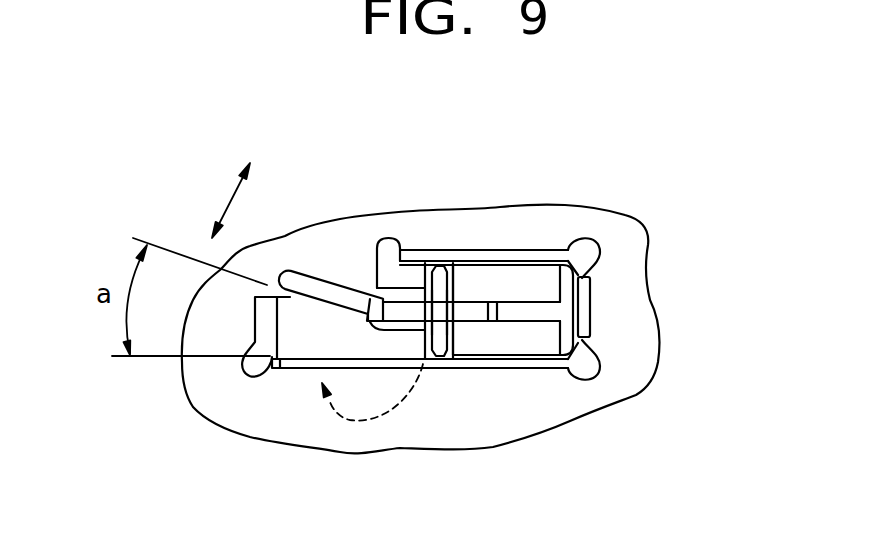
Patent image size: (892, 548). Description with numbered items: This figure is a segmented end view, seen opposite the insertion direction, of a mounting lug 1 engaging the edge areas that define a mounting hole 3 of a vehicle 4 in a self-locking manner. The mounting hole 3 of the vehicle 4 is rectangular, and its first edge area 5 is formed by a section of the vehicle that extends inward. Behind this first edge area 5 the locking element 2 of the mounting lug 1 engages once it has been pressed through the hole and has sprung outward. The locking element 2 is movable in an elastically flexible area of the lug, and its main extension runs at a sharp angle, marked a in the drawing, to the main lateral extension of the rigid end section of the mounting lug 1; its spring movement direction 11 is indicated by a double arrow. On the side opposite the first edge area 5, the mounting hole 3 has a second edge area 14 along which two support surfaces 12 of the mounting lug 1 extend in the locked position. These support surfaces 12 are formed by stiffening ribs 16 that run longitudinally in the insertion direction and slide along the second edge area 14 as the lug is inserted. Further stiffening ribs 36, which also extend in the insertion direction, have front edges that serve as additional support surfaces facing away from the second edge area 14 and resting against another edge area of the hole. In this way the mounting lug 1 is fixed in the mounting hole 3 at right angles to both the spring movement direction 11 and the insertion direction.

The mounting lug 1 is at (466, 306).
The locking element 2 is at (318, 291).
The mounting hole 3 is at (507, 285).
The vehicle 4 is at (547, 400).
The first edge area 5 is at (279, 362).
The spring movement direction 11 is at (224, 200).
The support surfaces 12 is at (566, 365).
The second edge area 14 is at (333, 357).
The stiffening ribs 16 is at (567, 329).
The stiffening ribs 36 is at (440, 288).